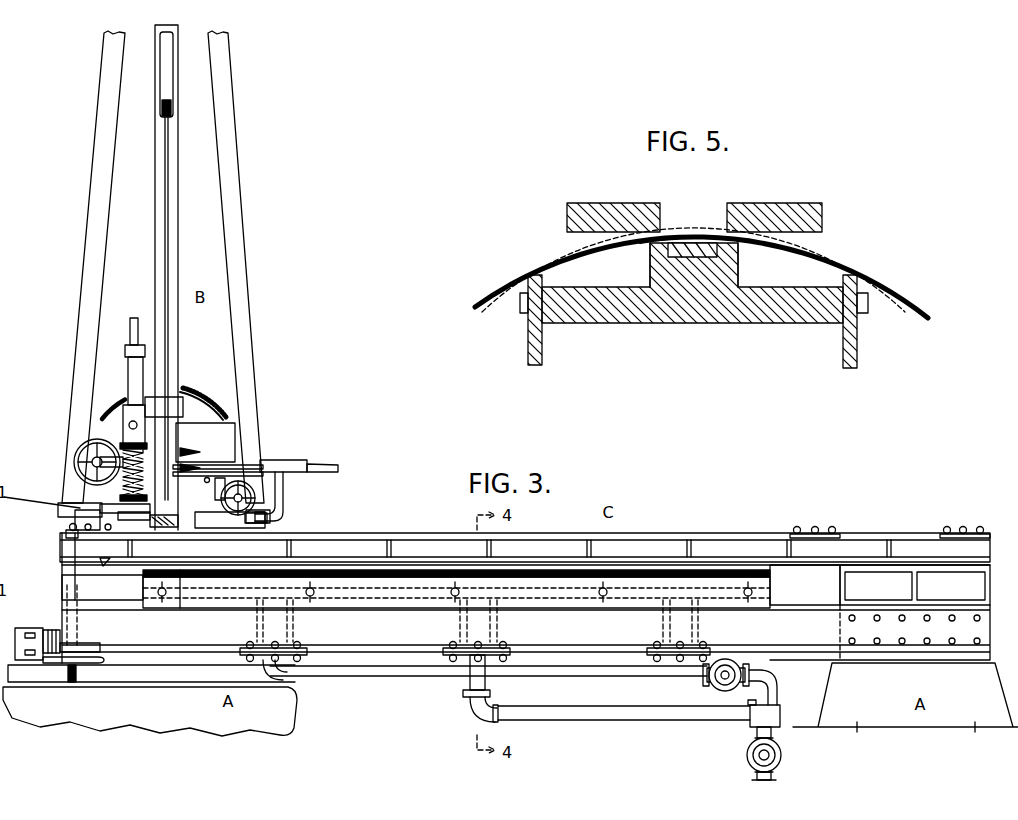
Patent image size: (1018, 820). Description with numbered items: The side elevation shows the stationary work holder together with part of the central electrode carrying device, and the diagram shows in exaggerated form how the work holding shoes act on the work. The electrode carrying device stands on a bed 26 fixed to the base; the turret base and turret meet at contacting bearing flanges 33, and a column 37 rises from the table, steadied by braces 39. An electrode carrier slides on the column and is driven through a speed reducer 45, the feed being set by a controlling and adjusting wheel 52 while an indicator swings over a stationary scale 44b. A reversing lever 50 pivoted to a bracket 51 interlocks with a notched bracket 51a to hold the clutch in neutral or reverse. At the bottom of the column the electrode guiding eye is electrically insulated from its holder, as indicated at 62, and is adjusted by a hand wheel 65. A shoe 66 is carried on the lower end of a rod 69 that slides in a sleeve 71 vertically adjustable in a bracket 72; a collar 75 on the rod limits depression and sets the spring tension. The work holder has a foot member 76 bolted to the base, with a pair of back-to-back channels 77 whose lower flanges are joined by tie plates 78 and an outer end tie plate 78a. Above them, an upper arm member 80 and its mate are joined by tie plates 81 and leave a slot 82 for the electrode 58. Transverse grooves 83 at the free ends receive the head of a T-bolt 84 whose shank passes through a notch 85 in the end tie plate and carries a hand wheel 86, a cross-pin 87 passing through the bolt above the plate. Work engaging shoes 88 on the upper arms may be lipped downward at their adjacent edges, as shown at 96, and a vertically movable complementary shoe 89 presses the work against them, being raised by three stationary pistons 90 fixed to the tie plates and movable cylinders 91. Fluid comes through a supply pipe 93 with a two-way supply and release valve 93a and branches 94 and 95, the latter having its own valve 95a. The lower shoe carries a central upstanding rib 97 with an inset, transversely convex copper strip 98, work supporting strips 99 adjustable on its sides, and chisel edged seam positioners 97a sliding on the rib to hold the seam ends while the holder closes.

In FIG. 3, the braces 39 is at (103, 143).
In FIG. 3, the column 37 is at (170, 143).
In FIG. 3, the electrode 58 is at (169, 194).
In FIG. 3, the rod 69 is at (130, 325).
In FIG. 3, the collar 75 is at (125, 350).
In FIG. 3, the sleeve 71 is at (133, 377).
In FIG. 3, the stationary scale 44b is at (197, 394).
In FIG. 3, the bracket 72 is at (125, 477).
In FIG. 3, the controlling and adjusting wheel 52 is at (73, 452).
In FIG. 3, the speed reducer 45 is at (230, 453).
In FIG. 3, the bracket 51 is at (205, 483).
In FIG. 3, the reversing lever 50 is at (340, 467).
In FIG. 3, the hand wheel 65 is at (284, 502).
In FIG. 3, the notched bracket 51a is at (283, 515).
In FIG. 3, the electrical insulation 62 is at (176, 520).
In FIG. 3, the upper arm member 80 is at (683, 540).
In FIG. 3, the tie plates 81 is at (70, 527).
In FIG. 3, the transverse grooves 83 is at (67, 537).
In FIG. 3, the shoe 66 is at (73, 555).
In FIG. 3, the work engaging shoes 88 is at (712, 572).
In FIG. 5, the work engaging shoes 88 is at (567, 218).
In FIG. 3, the complementary shoe 89 is at (742, 575).
In FIG. 5, the complementary shoe 89 is at (670, 323).
In FIG. 3, the T-bolt 84 is at (73, 590).
In FIG. 3, the bearing flanges 33 is at (102, 579).
In FIG. 3, the chisel edged seam positioners 97a is at (772, 578).
In FIG. 3, the foot member 76 is at (915, 585).
In FIG. 3, the channels 77 is at (526, 632).
In FIG. 3, the stationary pistons 90 is at (256, 620).
In FIG. 3, the movable cylinders 91 is at (294, 620).
In FIG. 3, the tie plates 78 is at (443, 655).
In FIG. 3, the outer end tie plate 78a is at (96, 645).
In FIG. 3, the cross-pin 87 is at (58, 632).
In FIG. 3, the notch 85 is at (78, 643).
In FIG. 3, the hand wheel 86 is at (106, 661).
In FIG. 3, the bed 26 is at (151, 666).
In FIG. 3, the branch pipe 95 is at (562, 678).
In FIG. 3, the branch pipe 94 is at (625, 720).
In FIG. 3, the valve 95a is at (772, 673).
In FIG. 3, the two-way fluid supply and release valve 93a is at (783, 755).
In FIG. 3, the fluid supply pipe 93 is at (772, 781).
In FIG. 5, the central upstanding rib 97 is at (738, 245).
In FIG. 5, the work supporting strips 99 is at (528, 350).
In FIG. 5, the slot 82 is at (726, 210).
In FIG. 5, the copper strip 98 is at (680, 243).
In FIG. 5, the downward lip 96 is at (652, 245).